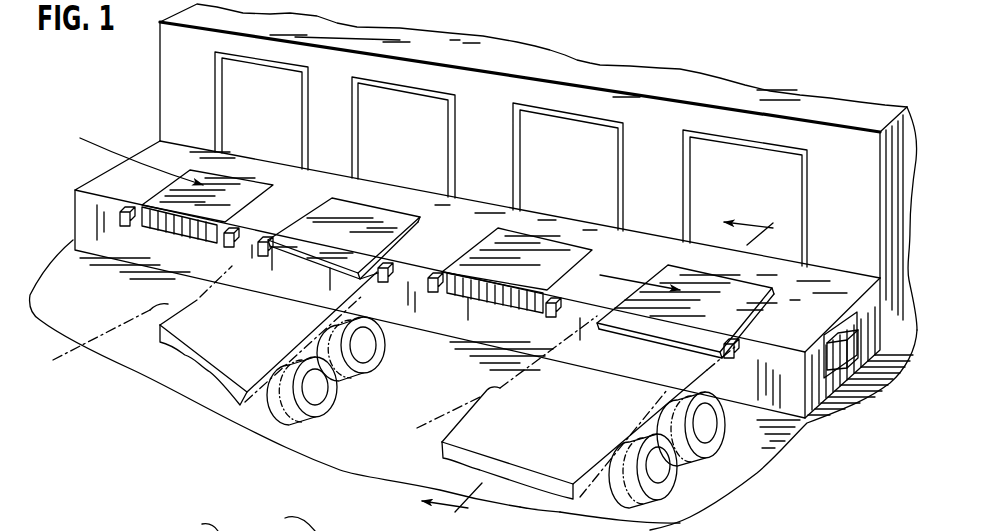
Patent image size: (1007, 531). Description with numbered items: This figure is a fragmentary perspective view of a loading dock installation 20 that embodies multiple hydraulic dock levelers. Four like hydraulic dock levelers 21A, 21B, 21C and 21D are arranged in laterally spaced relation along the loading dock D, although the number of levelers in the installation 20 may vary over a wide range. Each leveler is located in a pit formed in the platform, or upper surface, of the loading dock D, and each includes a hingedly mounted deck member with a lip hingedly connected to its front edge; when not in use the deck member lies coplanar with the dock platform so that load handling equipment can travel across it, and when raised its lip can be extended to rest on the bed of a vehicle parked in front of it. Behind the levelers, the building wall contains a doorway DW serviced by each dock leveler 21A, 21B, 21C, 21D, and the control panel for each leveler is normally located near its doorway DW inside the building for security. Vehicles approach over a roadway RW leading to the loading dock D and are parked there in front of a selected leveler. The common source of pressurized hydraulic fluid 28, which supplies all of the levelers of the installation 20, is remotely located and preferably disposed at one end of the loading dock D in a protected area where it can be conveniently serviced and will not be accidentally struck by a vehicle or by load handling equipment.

The loading dock installation 20 is at (133, 120).
The hydraulic dock leveler 21A is at (657, 343).
The hydraulic dock leveler 21B is at (458, 307).
The hydraulic dock leveler 21C is at (353, 227).
The hydraulic dock leveler 21D is at (147, 230).
The common source of pressurized hydraulic fluid 28 is at (834, 328).
The doorway DW is at (270, 115).
The roadway RW is at (367, 459).
The loading dock D is at (747, 418).